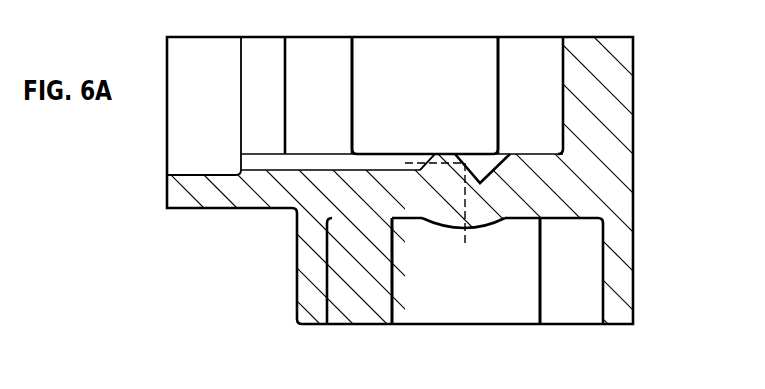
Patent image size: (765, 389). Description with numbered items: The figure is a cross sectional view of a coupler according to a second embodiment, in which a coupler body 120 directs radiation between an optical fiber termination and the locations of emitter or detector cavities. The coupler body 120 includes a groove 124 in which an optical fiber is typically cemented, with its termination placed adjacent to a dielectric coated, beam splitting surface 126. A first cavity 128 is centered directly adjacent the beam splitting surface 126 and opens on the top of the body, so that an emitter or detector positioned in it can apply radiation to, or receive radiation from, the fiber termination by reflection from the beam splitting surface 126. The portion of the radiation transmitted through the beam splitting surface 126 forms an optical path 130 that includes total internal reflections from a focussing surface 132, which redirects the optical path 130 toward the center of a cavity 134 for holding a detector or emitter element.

The coupler body 120 is at (633, 80).
The groove 124 is at (343, 163).
The beam splitting surface 126 is at (420, 155).
The first cavity 128 is at (422, 62).
The optical path 130 is at (468, 205).
The focussing surface 132 is at (482, 157).
The cavity 134 is at (480, 298).